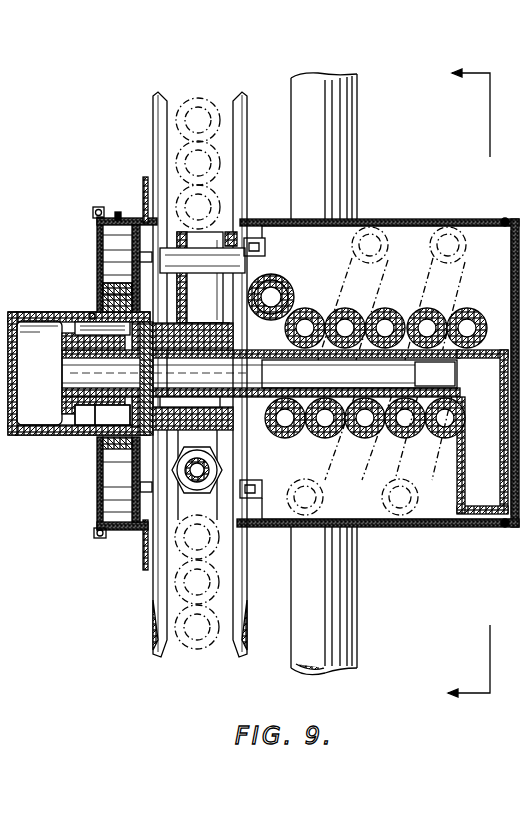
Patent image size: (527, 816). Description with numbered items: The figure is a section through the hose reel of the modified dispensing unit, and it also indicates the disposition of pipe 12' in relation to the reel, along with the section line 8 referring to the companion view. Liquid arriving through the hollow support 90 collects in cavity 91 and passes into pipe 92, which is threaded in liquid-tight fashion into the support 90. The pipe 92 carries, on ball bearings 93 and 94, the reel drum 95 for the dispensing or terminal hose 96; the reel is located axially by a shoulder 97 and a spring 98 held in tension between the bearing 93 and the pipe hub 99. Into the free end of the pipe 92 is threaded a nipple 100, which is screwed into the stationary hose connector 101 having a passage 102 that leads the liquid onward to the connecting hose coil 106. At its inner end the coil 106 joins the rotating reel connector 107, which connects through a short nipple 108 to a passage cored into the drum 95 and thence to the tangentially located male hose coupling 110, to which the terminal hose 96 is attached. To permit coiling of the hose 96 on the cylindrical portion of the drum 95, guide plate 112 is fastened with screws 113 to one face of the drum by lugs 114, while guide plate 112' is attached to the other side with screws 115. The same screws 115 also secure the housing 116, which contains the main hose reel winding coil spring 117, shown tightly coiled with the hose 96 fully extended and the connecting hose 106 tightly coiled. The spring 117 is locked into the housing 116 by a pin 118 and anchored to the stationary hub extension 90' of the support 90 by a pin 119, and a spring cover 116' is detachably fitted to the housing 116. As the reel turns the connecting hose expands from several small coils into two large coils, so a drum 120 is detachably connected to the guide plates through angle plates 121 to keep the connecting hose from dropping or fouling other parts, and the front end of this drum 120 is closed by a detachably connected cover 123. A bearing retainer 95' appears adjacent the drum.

The section line 8 is at (461, 380).
The pipe 12' is at (341, 374).
The hollow support 90 is at (34, 302).
The stationary hub extension 90' is at (82, 305).
The cavity 91 is at (36, 431).
The pipe 92 is at (62, 370).
The ball bearing 93 is at (112, 415).
The ball bearing 94 is at (240, 420).
The reel drum 95 is at (193, 291).
The bearing retainer 95' is at (250, 212).
The dispensing or terminal hose 96 is at (200, 99).
The shoulder 97 is at (228, 362).
The spring 98 is at (85, 415).
The pipe hub 99 is at (78, 340).
The nipple 100 is at (412, 378).
The stationary hose connector 101 is at (511, 320).
The passage 102 is at (495, 492).
The connecting hose coil 106 is at (364, 438).
The rotating reel connector 107 is at (284, 283).
The short nipple 108 is at (291, 298).
The male hose coupling 110 is at (196, 494).
The guide plate 112 is at (242, 365).
The guide plate 112' is at (168, 363).
The screw 113 is at (265, 262).
The lug 114 is at (240, 252).
The screw 115 is at (142, 258).
The housing 116 is at (108, 544).
The spring cover 116' is at (104, 264).
The main hose reel winding coil spring 117 is at (97, 450).
The pin 118 is at (118, 217).
The pin 119 is at (110, 298).
The drum 120 is at (380, 226).
The angle plate 121 is at (266, 240).
The cover 123 is at (511, 258).